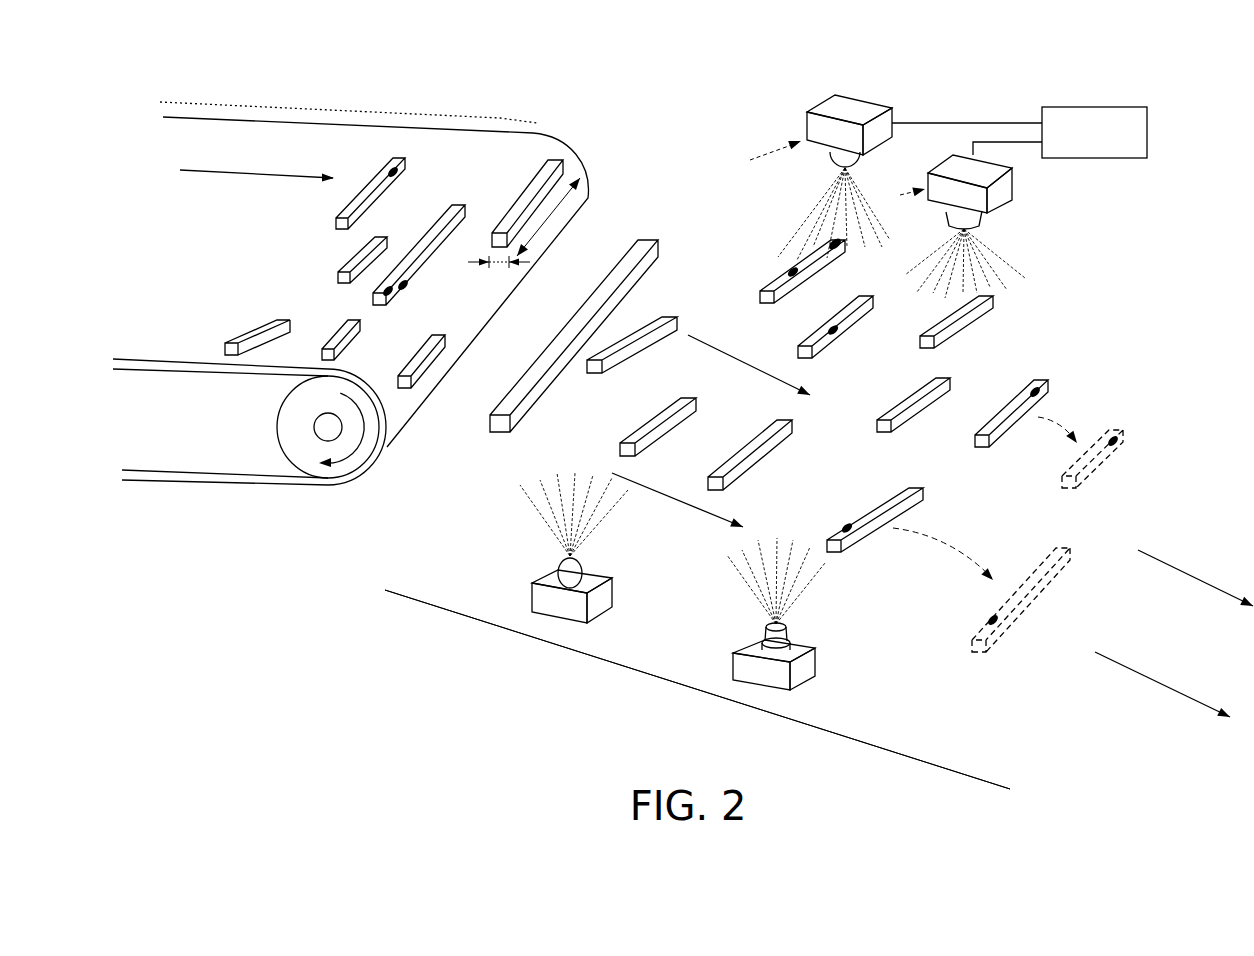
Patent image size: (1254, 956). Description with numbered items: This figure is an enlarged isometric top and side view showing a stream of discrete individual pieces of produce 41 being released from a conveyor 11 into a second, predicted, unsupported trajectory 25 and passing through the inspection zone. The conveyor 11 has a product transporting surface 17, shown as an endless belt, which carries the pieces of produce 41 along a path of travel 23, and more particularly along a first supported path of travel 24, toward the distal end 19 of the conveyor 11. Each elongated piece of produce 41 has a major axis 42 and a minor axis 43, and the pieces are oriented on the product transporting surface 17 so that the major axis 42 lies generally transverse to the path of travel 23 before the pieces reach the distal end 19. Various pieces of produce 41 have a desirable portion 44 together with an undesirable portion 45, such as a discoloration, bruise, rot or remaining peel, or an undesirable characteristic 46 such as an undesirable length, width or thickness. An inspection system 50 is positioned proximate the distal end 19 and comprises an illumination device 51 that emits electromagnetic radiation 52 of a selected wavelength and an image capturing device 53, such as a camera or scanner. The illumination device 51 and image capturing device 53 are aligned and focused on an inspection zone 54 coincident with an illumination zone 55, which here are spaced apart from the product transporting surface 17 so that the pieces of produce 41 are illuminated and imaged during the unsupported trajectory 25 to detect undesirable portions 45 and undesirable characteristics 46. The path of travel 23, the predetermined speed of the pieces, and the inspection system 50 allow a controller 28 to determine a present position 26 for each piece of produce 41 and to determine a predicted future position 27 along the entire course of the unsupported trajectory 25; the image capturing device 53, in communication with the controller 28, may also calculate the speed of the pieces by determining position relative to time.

The conveyor 11 is at (218, 455).
The product transporting surface 17 is at (240, 255).
The distal end 19 is at (387, 415).
The path of travel 23 is at (238, 177).
The first supported path of travel 24 is at (373, 113).
The second predicted unsupported trajectory 25 is at (745, 363).
The present position 26 is at (1008, 393).
The predicted future position 27 is at (1097, 482).
The controller 28 is at (1083, 142).
The discrete individual piece of produce 41 is at (444, 211).
The major axis 42 is at (553, 203).
The minor axis 43 is at (500, 268).
The desirable portion 44 is at (535, 357).
The undesirable portion 45 is at (397, 171).
The undesirable characteristic 46 is at (612, 270).
The inspection system 50 is at (822, 177).
The illumination device 51 is at (706, 359).
The electromagnetic radiation 52 is at (808, 212).
The image capturing device 53 is at (876, 422).
The inspection zone 54 is at (691, 688).
The illumination zone 55 is at (697, 689).